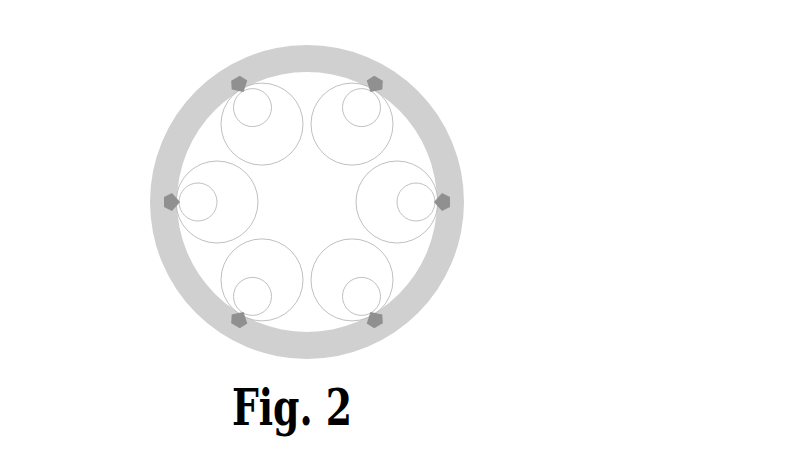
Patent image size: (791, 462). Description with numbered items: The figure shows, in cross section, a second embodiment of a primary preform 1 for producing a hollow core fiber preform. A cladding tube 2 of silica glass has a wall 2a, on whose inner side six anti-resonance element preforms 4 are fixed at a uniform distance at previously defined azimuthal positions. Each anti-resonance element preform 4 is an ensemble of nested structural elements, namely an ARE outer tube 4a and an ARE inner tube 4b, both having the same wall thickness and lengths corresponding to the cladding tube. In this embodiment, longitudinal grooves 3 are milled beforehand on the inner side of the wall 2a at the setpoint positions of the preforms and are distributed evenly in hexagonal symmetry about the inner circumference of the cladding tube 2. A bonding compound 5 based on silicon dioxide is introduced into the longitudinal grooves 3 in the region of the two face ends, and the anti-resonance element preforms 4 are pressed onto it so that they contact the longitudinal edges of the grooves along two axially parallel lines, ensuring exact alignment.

The primary preform 1 is at (470, 88).
The cladding tube 2 is at (238, 58).
The wall 2a is at (204, 100).
The longitudinal grooves 3 is at (355, 183).
The bonding compound 5 is at (378, 85).
The anti-resonance element preforms 4 is at (183, 178).
The ARE outer tube 4a is at (215, 237).
The ARE inner tube 4b is at (187, 210).